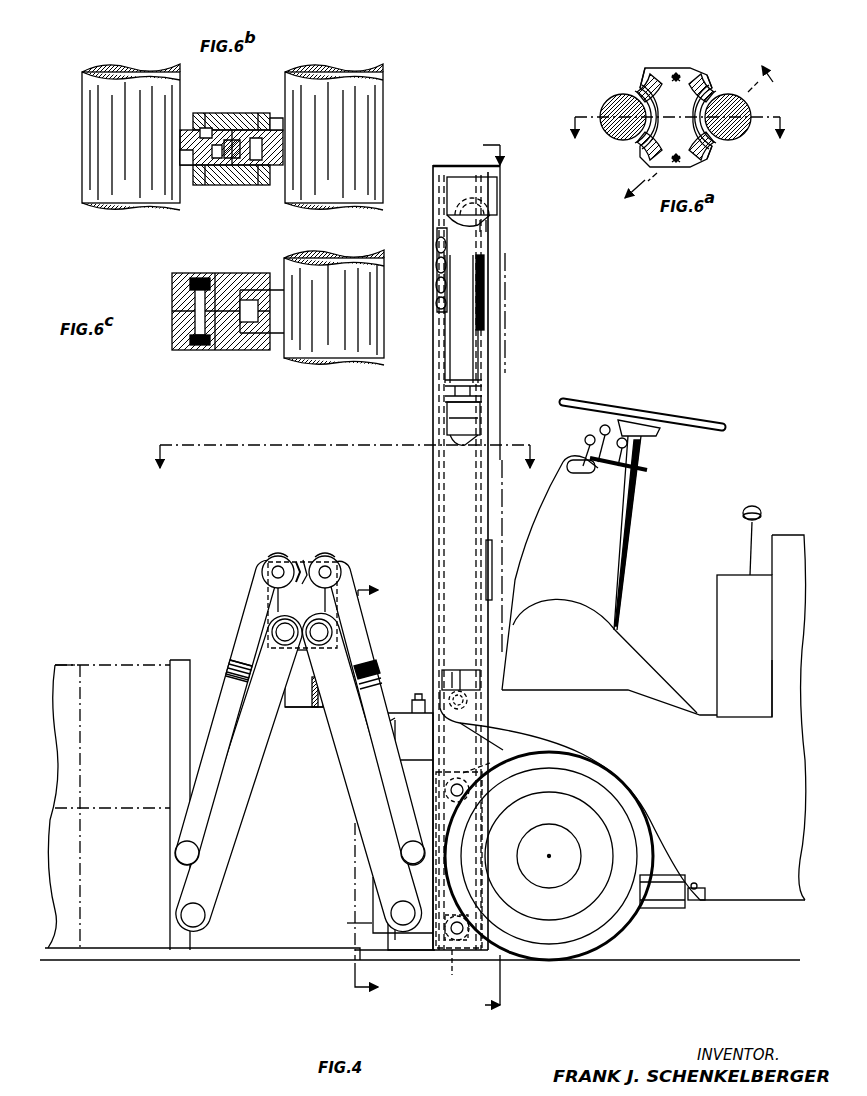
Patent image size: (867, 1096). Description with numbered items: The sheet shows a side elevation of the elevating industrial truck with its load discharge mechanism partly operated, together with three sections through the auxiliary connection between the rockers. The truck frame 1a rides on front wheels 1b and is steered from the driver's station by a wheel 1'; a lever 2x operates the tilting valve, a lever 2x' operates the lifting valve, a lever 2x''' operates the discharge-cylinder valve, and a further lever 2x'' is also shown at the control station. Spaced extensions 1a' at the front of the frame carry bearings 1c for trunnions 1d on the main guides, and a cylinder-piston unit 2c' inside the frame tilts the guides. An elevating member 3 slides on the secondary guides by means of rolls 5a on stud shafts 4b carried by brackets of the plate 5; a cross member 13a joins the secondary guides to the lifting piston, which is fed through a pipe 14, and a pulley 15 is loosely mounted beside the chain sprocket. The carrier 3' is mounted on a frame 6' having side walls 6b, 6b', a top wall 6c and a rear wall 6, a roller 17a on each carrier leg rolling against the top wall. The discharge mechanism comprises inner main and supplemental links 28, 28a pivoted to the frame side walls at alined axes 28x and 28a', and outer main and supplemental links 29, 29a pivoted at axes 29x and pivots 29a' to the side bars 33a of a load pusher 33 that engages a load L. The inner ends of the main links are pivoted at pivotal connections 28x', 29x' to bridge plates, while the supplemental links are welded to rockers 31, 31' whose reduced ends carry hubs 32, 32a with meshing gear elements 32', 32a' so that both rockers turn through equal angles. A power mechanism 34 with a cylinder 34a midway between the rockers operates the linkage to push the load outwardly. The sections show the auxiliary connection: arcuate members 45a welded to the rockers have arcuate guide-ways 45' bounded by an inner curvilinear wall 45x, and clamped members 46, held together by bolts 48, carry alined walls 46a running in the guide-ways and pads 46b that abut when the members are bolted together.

In FIG. 4, the steering wheel 1' is at (642, 409).
In FIG. 4, the truck frame 1a is at (753, 734).
In FIG. 4, the spaced extensions 1a' is at (575, 557).
In FIG. 4, the front wheels 1b is at (613, 930).
In FIG. 4, the bearings 1c is at (465, 668).
In FIG. 4, the trunnions 1d is at (442, 680).
In FIG. 4, the cylinder-piston unit 2c' is at (677, 874).
In FIG. 4, the lever 2x is at (637, 506).
In FIG. 4, the lever 2x' is at (608, 414).
In FIG. 4, the control bracket 2x'' is at (593, 443).
In FIG. 4, the lever 2x''' is at (770, 523).
In FIG. 4, the elevating member 3 is at (471, 860).
In FIG. 4, the carrier 3' is at (395, 916).
In FIG. 4, the stud shafts 4b is at (462, 800).
In FIG. 4, the plate 5 is at (374, 790).
In FIG. 4, the rolls 5a is at (473, 872).
In FIG. 4, the rear wall 6 is at (338, 472).
In FIG. 4, the frame 6' is at (410, 760).
In FIG. 6A, the side wall 6b is at (676, 142).
In FIG. 4, the side wall 6b' is at (345, 891).
In FIG. 6A, the top wall 6c is at (682, 118).
In FIG. 4, the top wall 6c is at (388, 722).
In FIG. 4, the cross member 13a is at (470, 238).
In FIG. 4, the pipe 14 is at (480, 579).
In FIG. 4, the pulley 15 is at (437, 233).
In FIG. 4, the roller 17a is at (400, 735).
In FIG. 4, the inner main links 28 is at (355, 785).
In FIG. 4, the inner supplemental links 28a is at (383, 673).
In FIG. 4, the alined axes 28a' is at (396, 842).
In FIG. 4, the alined axes 28x is at (400, 901).
In FIG. 4, the alined axes 28x' is at (351, 623).
In FIG. 4, the outer main links 29 is at (247, 785).
In FIG. 4, the outer supplemental links 29a is at (228, 661).
In FIG. 4, the pivots 29a' is at (163, 855).
In FIG. 4, the alined axes 29x is at (217, 920).
In FIG. 4, the pivotal connections 29x' is at (251, 624).
In FIG. 6B, the rocker 31 is at (353, 137).
In FIG. 6A, the rocker 31 is at (746, 113).
In FIG. 6B, the rocker 31' is at (124, 154).
In FIG. 6A, the rocker 31' is at (609, 112).
In FIG. 4, the member 32 is at (315, 598).
In FIG. 4, the gear elements 32' is at (316, 600).
In FIG. 4, the member 32a is at (284, 600).
In FIG. 4, the gear elements 32a' is at (292, 545).
In FIG. 4, the load pusher 33 is at (104, 725).
In FIG. 4, the side bars 33a is at (178, 718).
In FIG. 4, the power mechanism 34 is at (304, 678).
In FIG. 4, the cylinder 34a is at (302, 707).
In FIG. 6B, the arcuate guide-ways 45' is at (241, 160).
In FIG. 6A, the arcuate guide-ways 45' is at (720, 168).
In FIG. 6B, the arcuate members 45a is at (283, 124).
In FIG. 6C, the arcuate members 45a is at (296, 300).
In FIG. 6A, the arcuate members 45a is at (705, 75).
In FIG. 6B, the inner curvilinear wall 45x is at (240, 140).
In FIG. 6B, the members 46 is at (228, 113).
In FIG. 6C, the members 46 is at (230, 273).
In FIG. 6A, the members 46 is at (672, 68).
In FIG. 6B, the alined walls 46a is at (208, 128).
In FIG. 6A, the pads 46b is at (640, 95).
In FIG. 6C, the bolts 48 is at (200, 278).
In FIG. 4, the load L is at (202, 812).